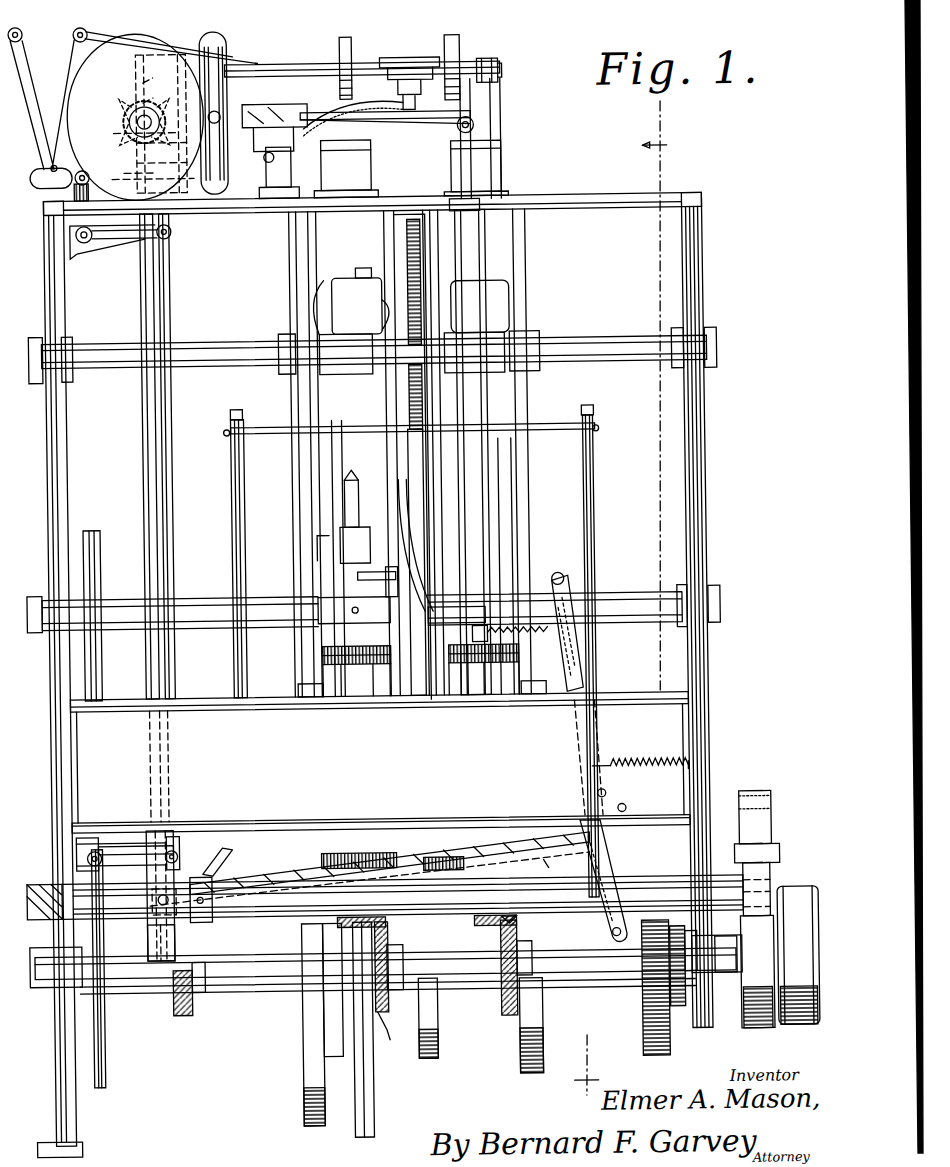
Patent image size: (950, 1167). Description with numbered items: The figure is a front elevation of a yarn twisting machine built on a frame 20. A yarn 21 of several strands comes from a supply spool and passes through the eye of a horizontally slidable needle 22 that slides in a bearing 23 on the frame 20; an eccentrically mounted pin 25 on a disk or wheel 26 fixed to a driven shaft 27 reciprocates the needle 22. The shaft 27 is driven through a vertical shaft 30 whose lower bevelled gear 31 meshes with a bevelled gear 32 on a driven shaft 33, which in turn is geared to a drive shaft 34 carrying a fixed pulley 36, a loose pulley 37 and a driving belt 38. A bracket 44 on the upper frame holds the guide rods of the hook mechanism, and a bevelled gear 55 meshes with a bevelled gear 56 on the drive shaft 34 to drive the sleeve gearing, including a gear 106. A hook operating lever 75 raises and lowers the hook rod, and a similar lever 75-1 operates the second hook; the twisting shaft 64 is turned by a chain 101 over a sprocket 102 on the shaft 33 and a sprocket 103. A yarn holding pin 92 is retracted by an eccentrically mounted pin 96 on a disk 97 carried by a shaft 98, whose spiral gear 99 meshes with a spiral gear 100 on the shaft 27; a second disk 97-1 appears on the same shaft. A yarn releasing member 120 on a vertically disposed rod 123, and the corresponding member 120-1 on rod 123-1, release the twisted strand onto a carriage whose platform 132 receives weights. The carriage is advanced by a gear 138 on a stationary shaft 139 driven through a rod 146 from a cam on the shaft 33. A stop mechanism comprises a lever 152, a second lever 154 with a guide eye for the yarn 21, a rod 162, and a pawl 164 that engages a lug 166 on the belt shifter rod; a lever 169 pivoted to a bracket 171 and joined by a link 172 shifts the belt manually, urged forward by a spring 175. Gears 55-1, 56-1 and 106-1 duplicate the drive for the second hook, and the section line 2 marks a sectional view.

The section line 2- 2 is at (619, 608).
The frame structure 20 is at (702, 500).
The yarn 21 is at (151, 35).
The horizontally slidable needle 22 is at (417, 116).
The bearing 23 is at (277, 124).
The eccentrically mounted pin 25 is at (227, 116).
The disk or wheel 26 is at (140, 44).
The driven shaft 27 is at (148, 119).
The vertical shaft 30 is at (144, 657).
The bevelled gear 31 is at (144, 999).
The bevelled gear 32 is at (184, 1008).
The driven shaft 33 is at (274, 989).
The drive shaft 34 is at (584, 1003).
The pulley 36 is at (742, 1035).
The loose pulley 37 is at (786, 899).
The driving belt 38 is at (756, 802).
The bracket 44 is at (476, 168).
The bevelled gear 55 is at (483, 931).
The bevel gear 55-1 is at (381, 916).
The bevelled gear 56 is at (494, 1012).
The gear 56-1 is at (387, 1036).
The shaft 64 is at (682, 590).
The hook operating lever 75 is at (497, 264).
The lever 75-1 is at (349, 502).
The yarn holding pin 92 is at (487, 128).
The eccentrically mounted pin 96 is at (482, 46).
The disk 97 is at (462, 40).
The collar 97-1 is at (359, 55).
The shaft 98 is at (292, 70).
The spiral gear 99 is at (143, 64).
The spiral gear 100 is at (127, 127).
The chain 101 is at (90, 1086).
The sprocket 102 is at (103, 1077).
The sprocket 103 is at (101, 565).
The gear 106 is at (478, 700).
The gear 106-1 is at (353, 700).
The yarn releasing member 120 is at (543, 429).
The rod 120-1 is at (253, 426).
The vertically disposed rod 123 is at (599, 470).
The rod 123-1 is at (247, 451).
The platform 132 is at (418, 68).
The gear 138 is at (405, 248).
The stationary shaft 139 is at (594, 348).
The rod 146 is at (422, 765).
The lever 152 is at (272, 158).
The second lever 154 is at (346, 169).
The rod 162 is at (177, 493).
The pawl 164 is at (209, 851).
The lug 166 is at (221, 883).
The lever 169 is at (559, 578).
The bracket 171 is at (626, 866).
The link 172 is at (546, 864).
The spring 175 is at (643, 766).